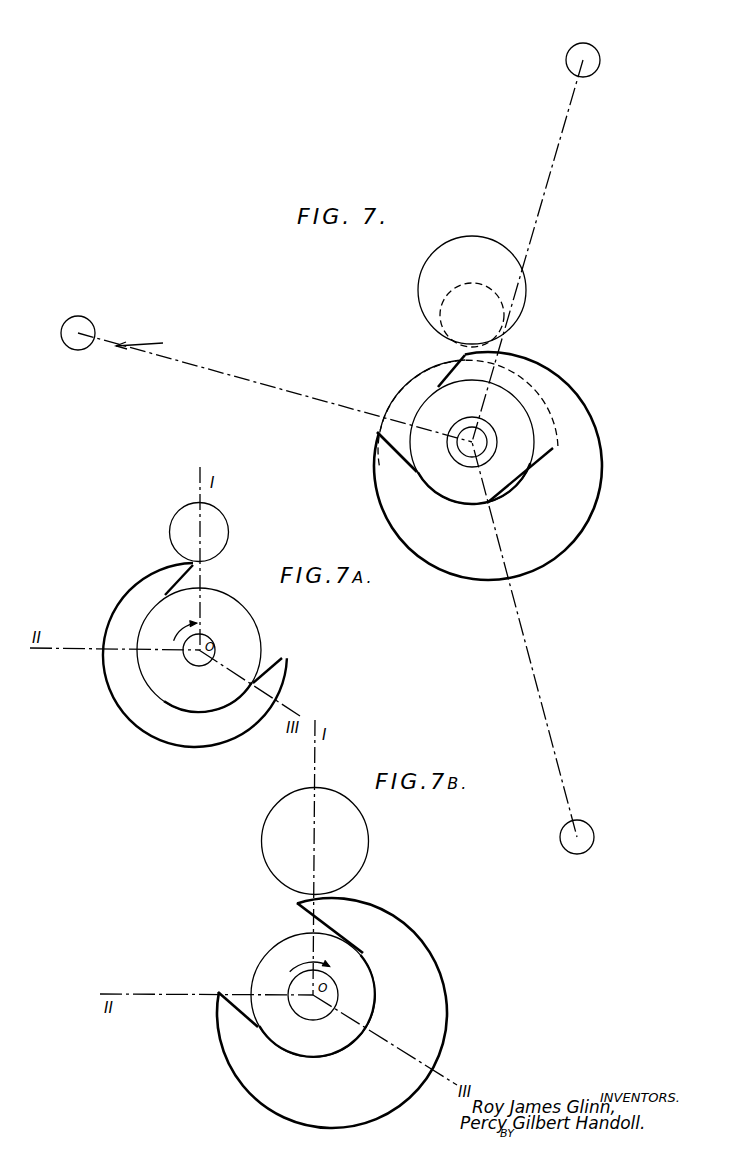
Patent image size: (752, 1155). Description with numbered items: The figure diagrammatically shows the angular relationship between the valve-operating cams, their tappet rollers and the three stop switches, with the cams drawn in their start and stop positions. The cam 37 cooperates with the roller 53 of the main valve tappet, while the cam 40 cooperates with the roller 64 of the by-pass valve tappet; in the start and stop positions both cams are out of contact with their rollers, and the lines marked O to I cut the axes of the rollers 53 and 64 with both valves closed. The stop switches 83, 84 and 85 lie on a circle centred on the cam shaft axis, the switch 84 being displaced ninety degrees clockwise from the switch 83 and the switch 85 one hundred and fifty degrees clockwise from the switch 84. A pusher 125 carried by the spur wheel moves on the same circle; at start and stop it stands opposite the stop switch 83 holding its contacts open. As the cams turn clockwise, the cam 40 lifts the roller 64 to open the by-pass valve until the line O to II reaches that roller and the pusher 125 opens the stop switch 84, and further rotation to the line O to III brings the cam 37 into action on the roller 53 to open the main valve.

In FIG. 7, the cam 37 is at (573, 524).
In FIG. 7B, the cam 37 is at (438, 1040).
In FIG. 7, the cam 40 is at (392, 470).
In FIG. 7A, the cam 40 is at (144, 721).
In FIG. 7, the roller 53 is at (507, 278).
In FIG. 7B, the roller 53 is at (357, 843).
In FIG. 7, the roller 64 is at (495, 327).
In FIG. 7A, the roller 64 is at (223, 532).
In FIG. 7, the stop switch 83 is at (88, 328).
In FIG. 7, the stop switch 84 is at (598, 62).
In FIG. 7, the stop switch 85 is at (590, 827).
In FIG. 7, the pusher 125 is at (156, 347).